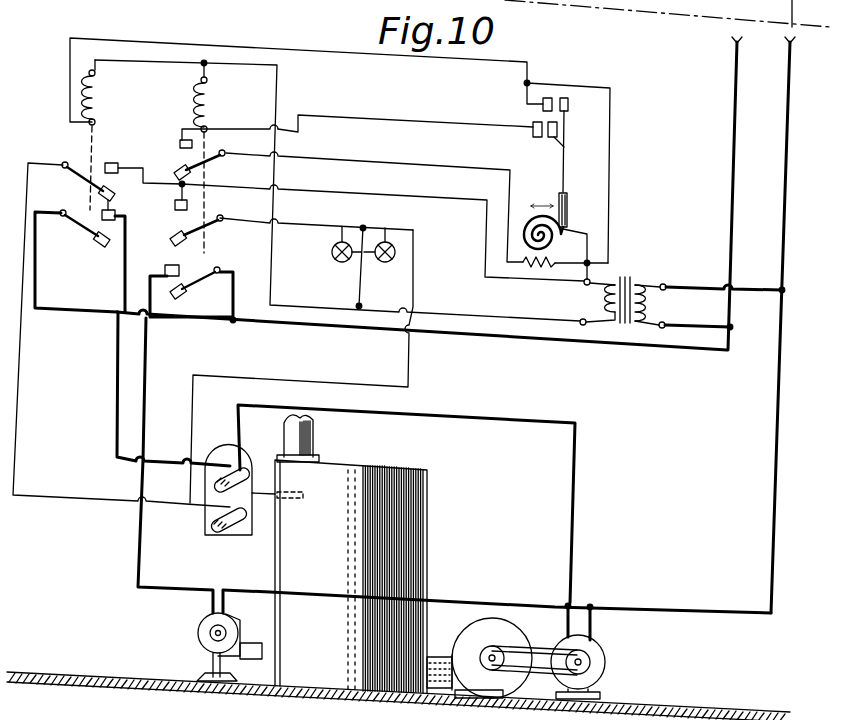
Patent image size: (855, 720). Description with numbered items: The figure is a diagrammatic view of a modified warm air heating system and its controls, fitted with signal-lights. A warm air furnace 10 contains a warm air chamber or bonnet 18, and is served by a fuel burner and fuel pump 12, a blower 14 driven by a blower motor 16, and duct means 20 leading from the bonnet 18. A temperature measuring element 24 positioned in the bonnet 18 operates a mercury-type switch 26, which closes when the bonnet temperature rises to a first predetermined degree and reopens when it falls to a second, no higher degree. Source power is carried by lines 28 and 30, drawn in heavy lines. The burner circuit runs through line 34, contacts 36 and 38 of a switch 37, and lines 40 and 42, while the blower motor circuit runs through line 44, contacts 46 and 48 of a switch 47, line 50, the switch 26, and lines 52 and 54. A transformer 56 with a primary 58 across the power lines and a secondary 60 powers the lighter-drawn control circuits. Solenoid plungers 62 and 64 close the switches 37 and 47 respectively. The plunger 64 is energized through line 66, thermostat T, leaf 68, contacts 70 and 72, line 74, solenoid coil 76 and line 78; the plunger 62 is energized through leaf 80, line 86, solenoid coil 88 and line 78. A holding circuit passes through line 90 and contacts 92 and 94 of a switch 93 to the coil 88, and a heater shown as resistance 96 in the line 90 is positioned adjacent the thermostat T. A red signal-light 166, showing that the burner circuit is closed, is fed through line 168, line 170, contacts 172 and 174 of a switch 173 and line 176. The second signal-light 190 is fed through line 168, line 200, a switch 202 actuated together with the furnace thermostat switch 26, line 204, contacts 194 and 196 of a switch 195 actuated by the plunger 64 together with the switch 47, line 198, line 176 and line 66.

The warm air furnace 10 is at (268, 559).
The fuel burner and fuel pump 12 is at (196, 640).
The blower 14 is at (501, 628).
The blower motor 16 is at (606, 662).
The warm air chamber or bonnet 18 is at (352, 580).
The duct means 20 is at (322, 443).
The temperature measuring element 24 is at (298, 498).
The switch 26 is at (260, 460).
The line 28 is at (733, 131).
The line 30 is at (786, 148).
The line 34 is at (234, 299).
The contact 36 is at (183, 296).
The switch 37 is at (203, 275).
The contact 38 is at (168, 264).
The line 40 is at (146, 354).
The line 42 is at (683, 610).
The line 44 is at (37, 280).
The contact 46 is at (103, 248).
The switch 47 is at (88, 236).
The contact 48 is at (117, 213).
The line 50 is at (117, 364).
The line 52 is at (470, 416).
The line 54 is at (593, 624).
The transformer 56 is at (635, 276).
The primary 58 is at (648, 305).
The secondary 60 is at (603, 294).
The solenoid plunger 62 is at (208, 168).
The solenoid plunger 64 is at (88, 136).
The line 66 is at (588, 254).
The leaf 68 is at (566, 119).
The contact 70 is at (570, 100).
The contact 72 is at (548, 97).
The line 74 is at (396, 62).
The solenoid coil 76 is at (100, 95).
The line 78 is at (278, 72).
The leaf 80 is at (564, 138).
The line 86 is at (437, 122).
The solenoid coil 88 is at (213, 88).
The line 90 is at (442, 143).
The contact 92 is at (210, 158).
The switch 93 is at (179, 156).
The contact 94 is at (180, 142).
The resistance 96 is at (540, 265).
The red signal-light 166 is at (333, 248).
The line 168 is at (358, 293).
The line 170 is at (336, 227).
The contact 172 is at (203, 235).
The switch 173 is at (178, 218).
The contact 174 is at (188, 205).
The line 176 is at (403, 199).
The signal-light 190 is at (395, 248).
The contact 194 is at (98, 193).
The switch 195 is at (100, 179).
The contact 196 is at (110, 163).
The line 198 is at (143, 170).
The line 200 is at (416, 290).
The switch 202 is at (230, 535).
The line 204 is at (91, 478).
The thermostat T is at (573, 212).